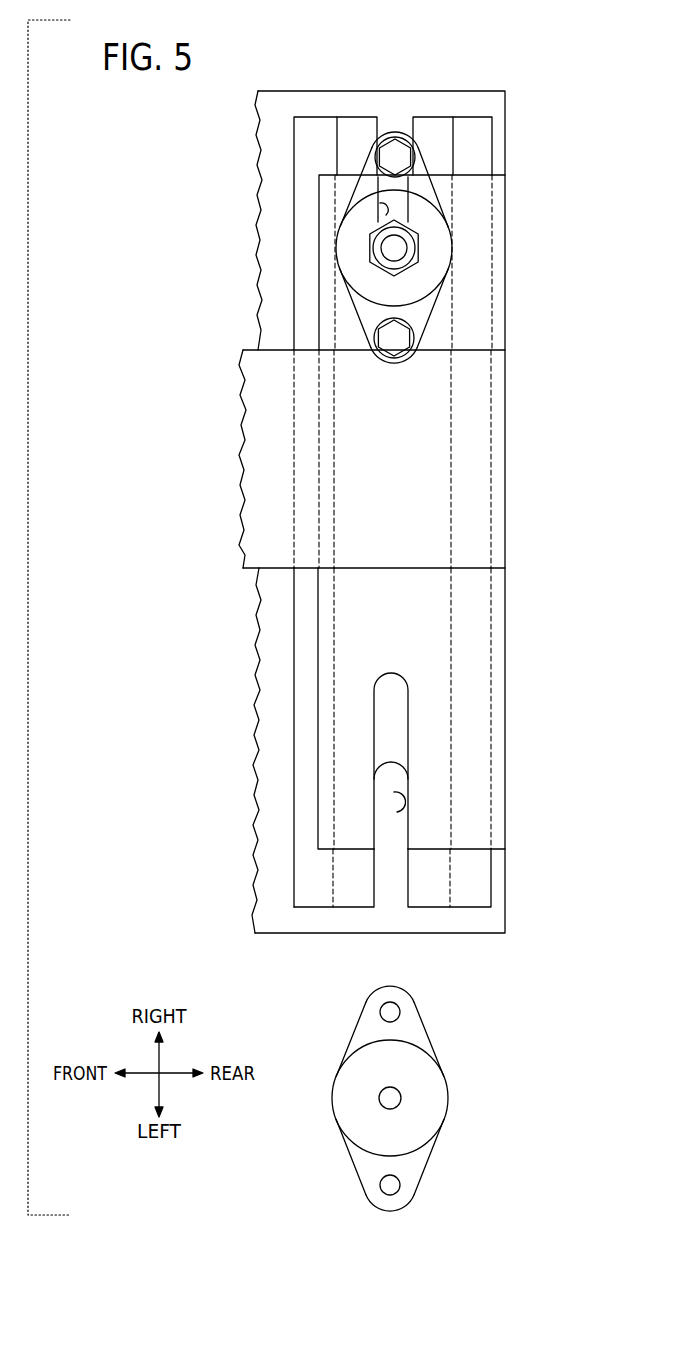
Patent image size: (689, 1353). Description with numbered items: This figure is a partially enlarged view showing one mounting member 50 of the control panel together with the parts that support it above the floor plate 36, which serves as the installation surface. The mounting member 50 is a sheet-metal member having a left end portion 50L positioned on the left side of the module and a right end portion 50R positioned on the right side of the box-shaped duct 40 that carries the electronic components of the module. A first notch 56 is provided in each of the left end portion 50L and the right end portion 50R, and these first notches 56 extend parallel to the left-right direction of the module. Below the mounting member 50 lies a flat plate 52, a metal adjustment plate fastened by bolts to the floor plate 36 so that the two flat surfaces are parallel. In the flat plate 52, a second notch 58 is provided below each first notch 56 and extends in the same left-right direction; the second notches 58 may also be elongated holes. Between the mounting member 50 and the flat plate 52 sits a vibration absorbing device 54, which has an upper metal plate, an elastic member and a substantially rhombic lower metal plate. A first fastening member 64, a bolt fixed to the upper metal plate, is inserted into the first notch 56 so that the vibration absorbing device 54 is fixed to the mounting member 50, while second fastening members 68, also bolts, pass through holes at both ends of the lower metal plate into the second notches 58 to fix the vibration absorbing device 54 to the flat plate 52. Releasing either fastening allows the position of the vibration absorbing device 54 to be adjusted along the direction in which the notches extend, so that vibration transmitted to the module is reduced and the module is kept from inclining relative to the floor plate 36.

The floor plate 36 is at (277, 923).
The duct 40 is at (248, 408).
The mounting member 50 is at (318, 200).
The right end portion 50R is at (497, 275).
The left end portion 50L is at (497, 641).
The flat plate 52 is at (471, 122).
The vibration absorbing device 54 is at (367, 158).
The first notch 56 is at (383, 207).
The second notch 58 is at (378, 138).
The first fastening member 64 is at (400, 246).
The second fastening member 68 is at (413, 157).